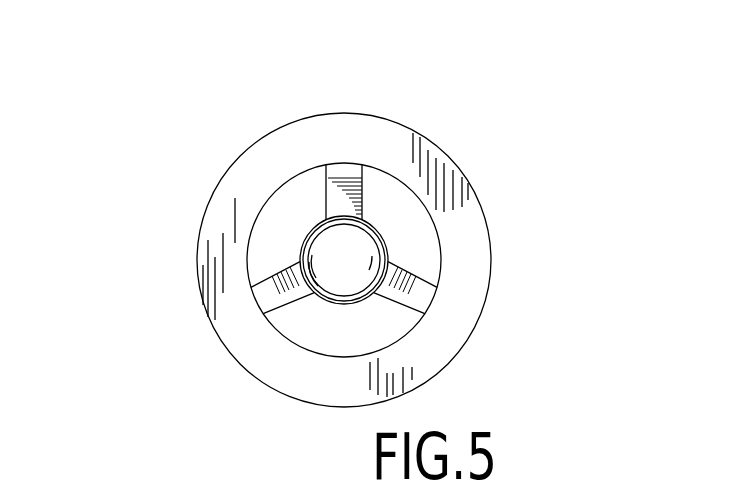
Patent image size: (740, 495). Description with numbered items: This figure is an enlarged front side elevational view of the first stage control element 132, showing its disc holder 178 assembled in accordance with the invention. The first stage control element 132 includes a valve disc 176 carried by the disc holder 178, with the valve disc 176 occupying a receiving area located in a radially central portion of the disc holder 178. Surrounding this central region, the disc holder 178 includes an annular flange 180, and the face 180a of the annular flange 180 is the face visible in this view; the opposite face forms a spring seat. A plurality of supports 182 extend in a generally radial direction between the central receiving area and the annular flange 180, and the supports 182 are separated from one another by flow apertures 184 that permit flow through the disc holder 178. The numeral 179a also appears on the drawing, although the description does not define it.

The first stage control element 132 is at (505, 222).
The valve disc 176 is at (343, 252).
The disc holder 178 is at (493, 285).
The hub flange surface 179a is at (317, 227).
The annular flange 180 is at (242, 335).
The face 180a is at (285, 142).
The supports 182 is at (343, 197).
The flow apertures 184 is at (280, 223).